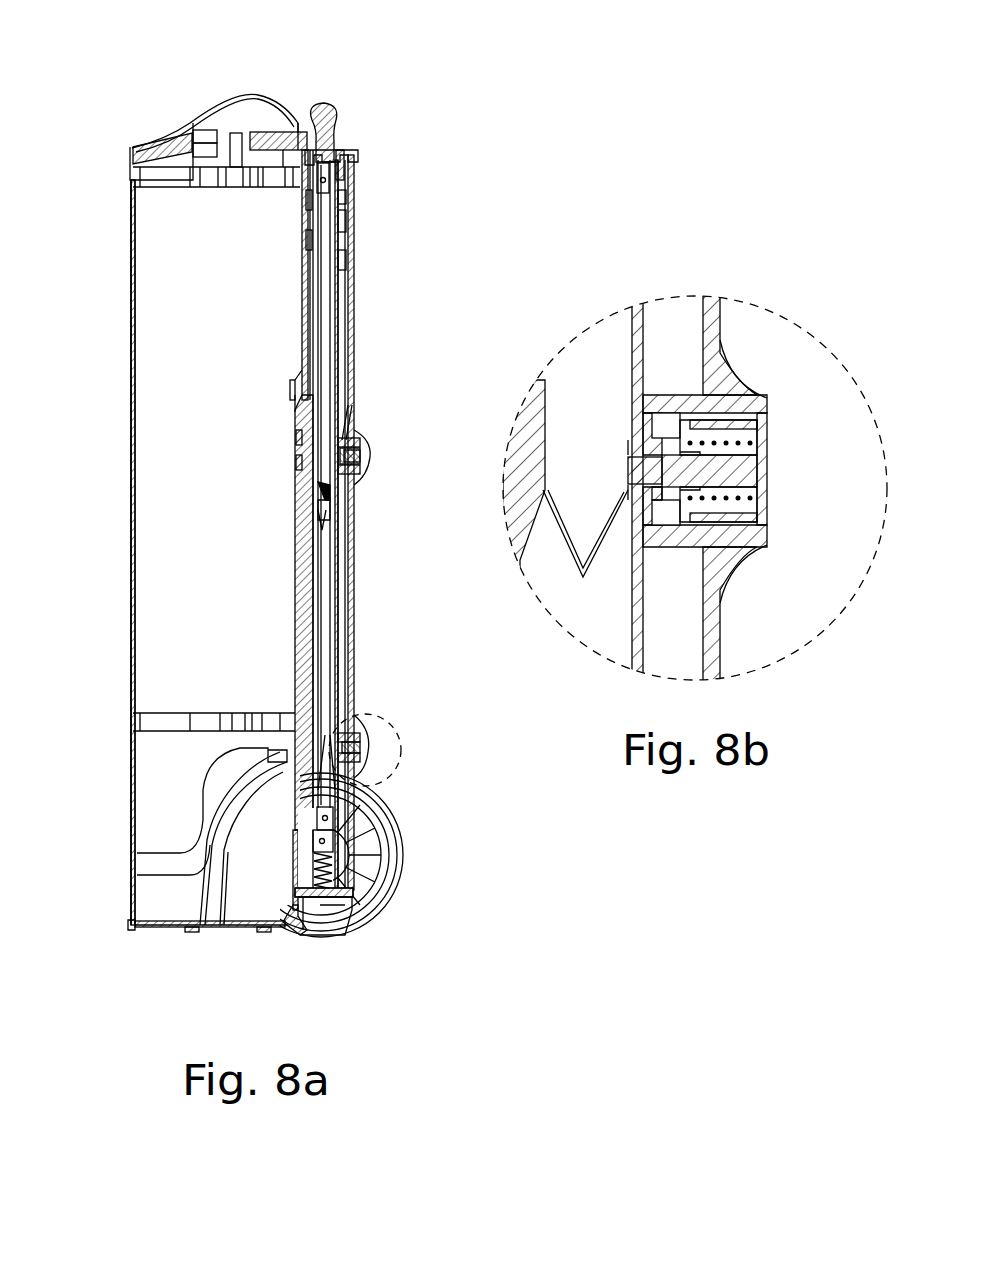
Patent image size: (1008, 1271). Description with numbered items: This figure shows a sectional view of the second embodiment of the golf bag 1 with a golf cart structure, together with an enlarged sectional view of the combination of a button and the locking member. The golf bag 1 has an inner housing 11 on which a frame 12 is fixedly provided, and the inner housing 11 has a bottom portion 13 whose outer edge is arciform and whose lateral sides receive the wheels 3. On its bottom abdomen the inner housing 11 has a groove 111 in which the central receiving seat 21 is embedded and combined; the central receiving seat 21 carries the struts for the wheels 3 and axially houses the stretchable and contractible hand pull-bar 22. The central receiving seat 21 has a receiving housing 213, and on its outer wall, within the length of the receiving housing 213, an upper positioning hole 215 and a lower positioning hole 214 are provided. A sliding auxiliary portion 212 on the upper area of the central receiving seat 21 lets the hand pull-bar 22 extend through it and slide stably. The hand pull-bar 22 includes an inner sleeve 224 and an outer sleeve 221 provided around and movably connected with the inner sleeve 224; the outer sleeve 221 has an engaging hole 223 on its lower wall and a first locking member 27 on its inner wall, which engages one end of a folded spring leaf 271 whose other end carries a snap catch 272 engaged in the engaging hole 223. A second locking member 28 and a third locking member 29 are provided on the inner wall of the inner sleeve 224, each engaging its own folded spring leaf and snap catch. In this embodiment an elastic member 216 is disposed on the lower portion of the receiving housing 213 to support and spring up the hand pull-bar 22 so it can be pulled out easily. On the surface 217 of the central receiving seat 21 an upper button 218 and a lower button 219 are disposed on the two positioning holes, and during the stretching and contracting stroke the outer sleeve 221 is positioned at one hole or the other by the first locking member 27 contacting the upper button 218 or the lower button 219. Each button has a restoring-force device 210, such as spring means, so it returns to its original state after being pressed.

In FIG. 8A, the golf bag 1 is at (103, 412).
In FIG. 8A, the inner housing 11 is at (133, 512).
In FIG. 8A, the groove 111 is at (296, 610).
In FIG. 8A, the frame 12 is at (186, 115).
In FIG. 8A, the bottom portion 13 is at (182, 945).
In FIG. 8A, the central receiving seat 21 is at (300, 540).
In FIG. 8A, the stretchable and contractible hand pull-bar 22 is at (340, 88).
In FIG. 8A, the sliding auxiliary portion 212 is at (345, 148).
In FIG. 8A, the receiving housing 213 is at (310, 930).
In FIG. 8B, the lower positioning hole 214 is at (660, 425).
In FIG. 8A, the upper positioning hole 215 is at (360, 435).
In FIG. 8A, the elastic member 216 is at (340, 866).
In FIG. 8A, the surface 217 is at (355, 594).
In FIG. 8B, the surface 217 is at (715, 614).
In FIG. 8A, the upper button 218 is at (366, 462).
In FIG. 8A, the lower button 219 is at (375, 757).
In FIG. 8B, the lower button 219 is at (760, 473).
In FIG. 8B, the restoring-force device 210 is at (790, 540).
In FIG. 8A, the outer sleeve 221 is at (340, 300).
In FIG. 8B, the engaging hole 223 is at (635, 434).
In FIG. 8A, the inner sleeve 224 is at (333, 243).
In FIG. 8B, the first locking member 27 is at (610, 555).
In FIG. 8B, the folded spring leaf 271 is at (605, 520).
In FIG. 8B, the snap catch 272 is at (662, 520).
In FIG. 8A, the second locking member 28 is at (318, 480).
In FIG. 8A, the third locking member 29 is at (350, 185).
In FIG. 8A, the wheel 3 is at (370, 910).